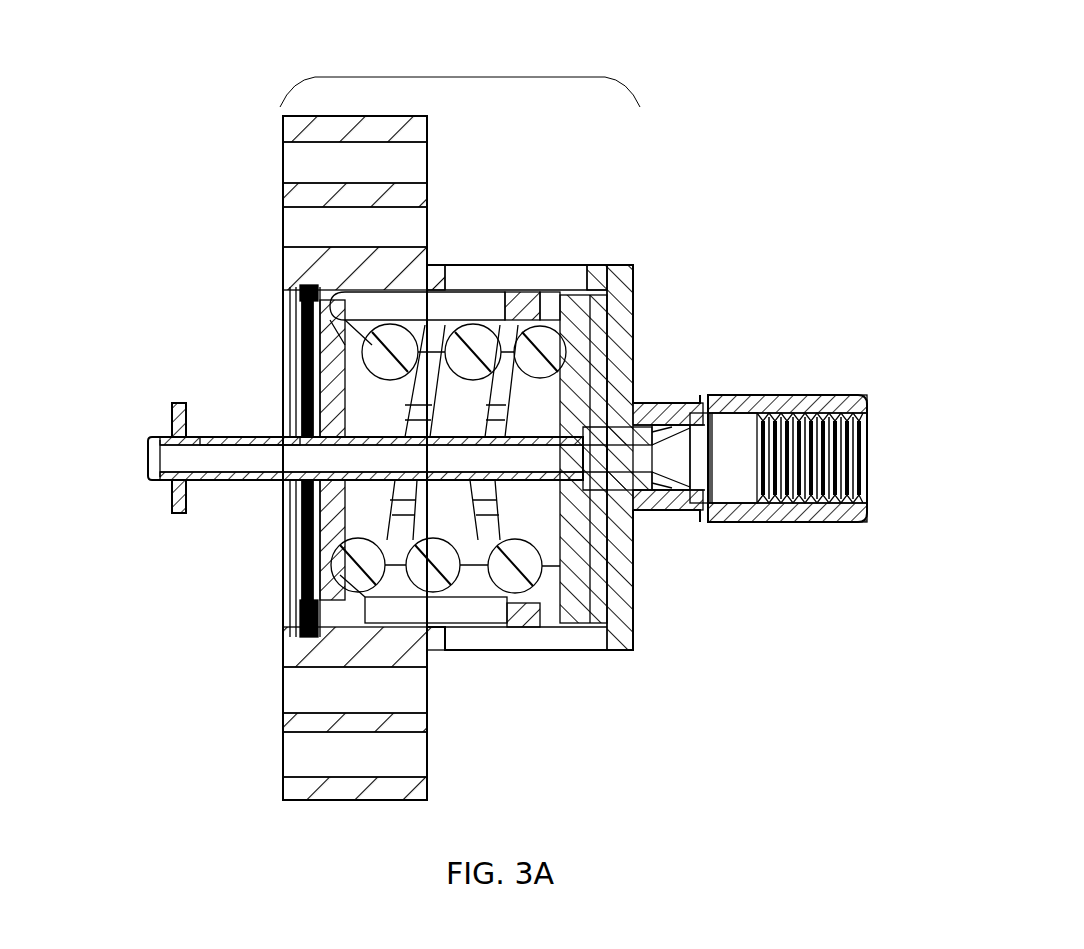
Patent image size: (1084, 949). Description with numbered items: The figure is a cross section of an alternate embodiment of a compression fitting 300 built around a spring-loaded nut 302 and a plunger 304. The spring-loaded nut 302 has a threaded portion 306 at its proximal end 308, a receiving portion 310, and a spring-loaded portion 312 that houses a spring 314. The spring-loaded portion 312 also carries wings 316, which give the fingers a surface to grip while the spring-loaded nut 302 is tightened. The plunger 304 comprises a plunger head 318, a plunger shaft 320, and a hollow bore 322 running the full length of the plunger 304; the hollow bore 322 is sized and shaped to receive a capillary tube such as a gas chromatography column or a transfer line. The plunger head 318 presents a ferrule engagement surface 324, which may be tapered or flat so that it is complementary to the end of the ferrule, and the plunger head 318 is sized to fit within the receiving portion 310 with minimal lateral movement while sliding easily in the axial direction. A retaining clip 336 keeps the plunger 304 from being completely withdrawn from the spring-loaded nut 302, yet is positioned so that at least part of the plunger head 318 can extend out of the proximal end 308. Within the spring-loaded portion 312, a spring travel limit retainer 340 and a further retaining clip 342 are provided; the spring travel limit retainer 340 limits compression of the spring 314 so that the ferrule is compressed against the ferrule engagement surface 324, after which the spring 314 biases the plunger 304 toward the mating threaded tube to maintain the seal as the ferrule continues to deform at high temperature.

The compression fitting 300 is at (776, 88).
The spring-loaded nut 302 is at (635, 643).
The plunger 304 is at (272, 486).
The threaded portion 306 is at (866, 390).
The proximal end 308 is at (865, 520).
The receiving portion 310 is at (640, 390).
The spring-loaded portion 312 is at (462, 77).
The spring 314 is at (287, 313).
The wings 316 is at (325, 188).
The plunger head 318 is at (648, 490).
The plunger shaft 320 is at (233, 435).
The hollow bore 322 is at (168, 481).
The ferrule engagement surface 324 is at (660, 478).
The retaining clip 336 is at (172, 413).
The spring travel limit retainer 340 is at (520, 630).
The retaining clip 342 is at (283, 598).